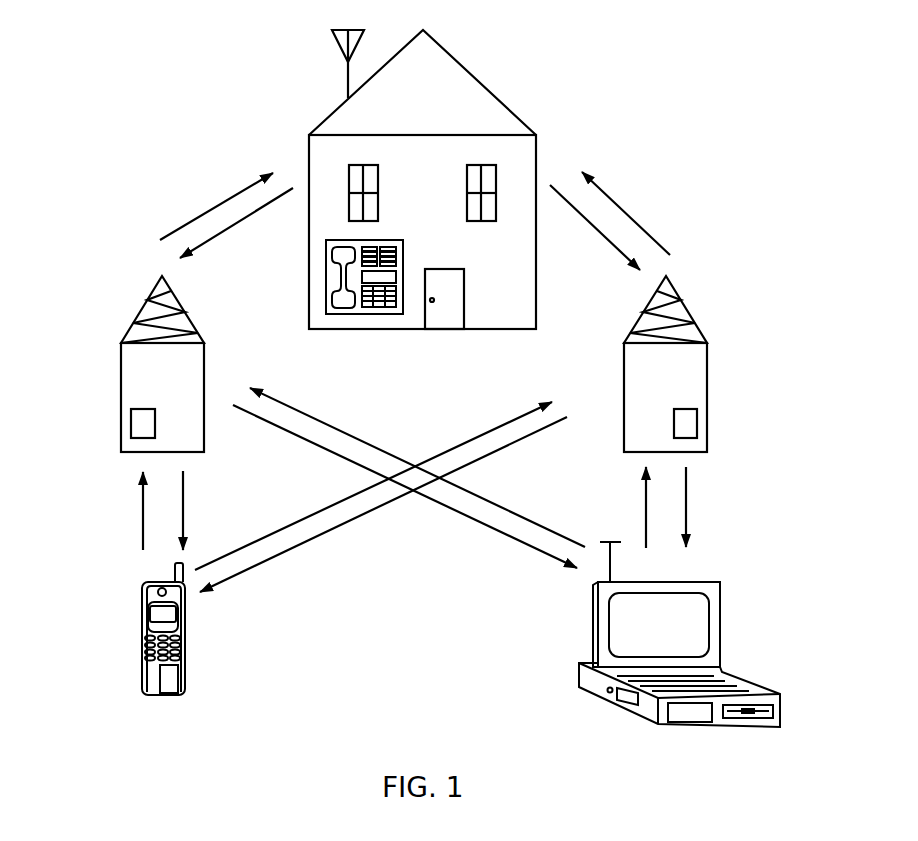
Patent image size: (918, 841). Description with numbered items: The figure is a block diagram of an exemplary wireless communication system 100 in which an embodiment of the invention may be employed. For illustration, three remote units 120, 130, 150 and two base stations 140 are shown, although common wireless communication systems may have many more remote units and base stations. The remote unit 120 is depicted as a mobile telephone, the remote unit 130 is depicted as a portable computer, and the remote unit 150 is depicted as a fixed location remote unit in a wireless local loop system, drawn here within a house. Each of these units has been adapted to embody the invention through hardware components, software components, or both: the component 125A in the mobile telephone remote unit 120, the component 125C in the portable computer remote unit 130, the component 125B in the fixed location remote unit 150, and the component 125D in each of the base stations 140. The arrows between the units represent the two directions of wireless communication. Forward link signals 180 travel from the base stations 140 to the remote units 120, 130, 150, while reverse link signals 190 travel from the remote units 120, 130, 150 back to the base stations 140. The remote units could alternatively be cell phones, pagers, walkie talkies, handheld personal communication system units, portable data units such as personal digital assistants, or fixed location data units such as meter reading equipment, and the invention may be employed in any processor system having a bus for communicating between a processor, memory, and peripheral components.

The wireless communication system 100 is at (143, 37).
The remote unit 120 is at (145, 590).
The component 125A is at (170, 680).
The component 125B is at (415, 287).
The component 125C is at (696, 712).
The component 125D is at (131, 423).
The remote unit 130 is at (705, 582).
The base station 140 is at (142, 310).
The remote unit 150 is at (326, 287).
The forward link signals 180 is at (220, 200).
The reverse link signals 190 is at (222, 235).